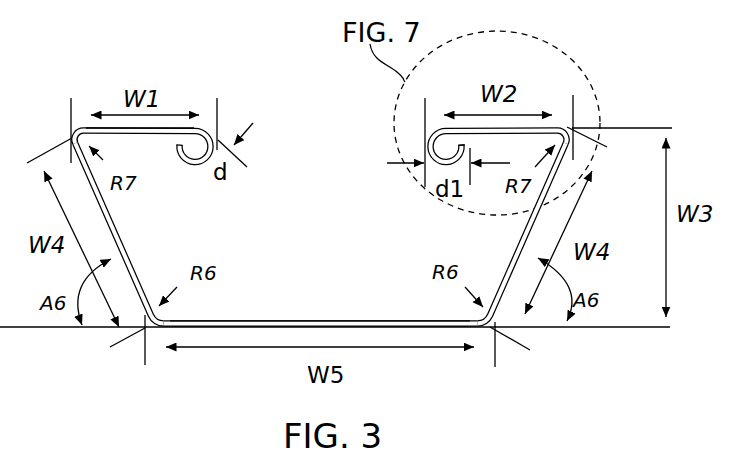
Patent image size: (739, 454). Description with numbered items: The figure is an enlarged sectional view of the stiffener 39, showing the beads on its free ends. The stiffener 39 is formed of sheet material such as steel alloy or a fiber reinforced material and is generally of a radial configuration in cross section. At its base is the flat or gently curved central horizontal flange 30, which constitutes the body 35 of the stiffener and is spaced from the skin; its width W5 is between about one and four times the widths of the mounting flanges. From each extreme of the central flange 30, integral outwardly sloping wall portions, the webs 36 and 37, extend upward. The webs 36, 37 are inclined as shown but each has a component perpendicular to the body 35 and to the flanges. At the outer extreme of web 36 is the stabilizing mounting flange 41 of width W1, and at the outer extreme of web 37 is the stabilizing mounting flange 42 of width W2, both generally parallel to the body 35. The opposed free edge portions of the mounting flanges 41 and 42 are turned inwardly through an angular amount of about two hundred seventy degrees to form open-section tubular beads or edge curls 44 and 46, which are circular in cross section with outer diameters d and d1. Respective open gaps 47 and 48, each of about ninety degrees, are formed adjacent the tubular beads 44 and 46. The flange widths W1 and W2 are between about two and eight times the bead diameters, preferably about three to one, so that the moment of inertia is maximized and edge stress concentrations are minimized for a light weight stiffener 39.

The central horizontal flange 30 is at (320, 190).
The body 35 is at (303, 319).
The web 36 is at (129, 262).
The web 37 is at (511, 266).
The stiffener 39 is at (269, 309).
The mounting flange 41 is at (164, 129).
The mounting flange 42 is at (520, 128).
The tubular bead 44 is at (188, 165).
The tubular bead 46 is at (428, 167).
The open gap 47 is at (176, 134).
The open gap 48 is at (464, 146).